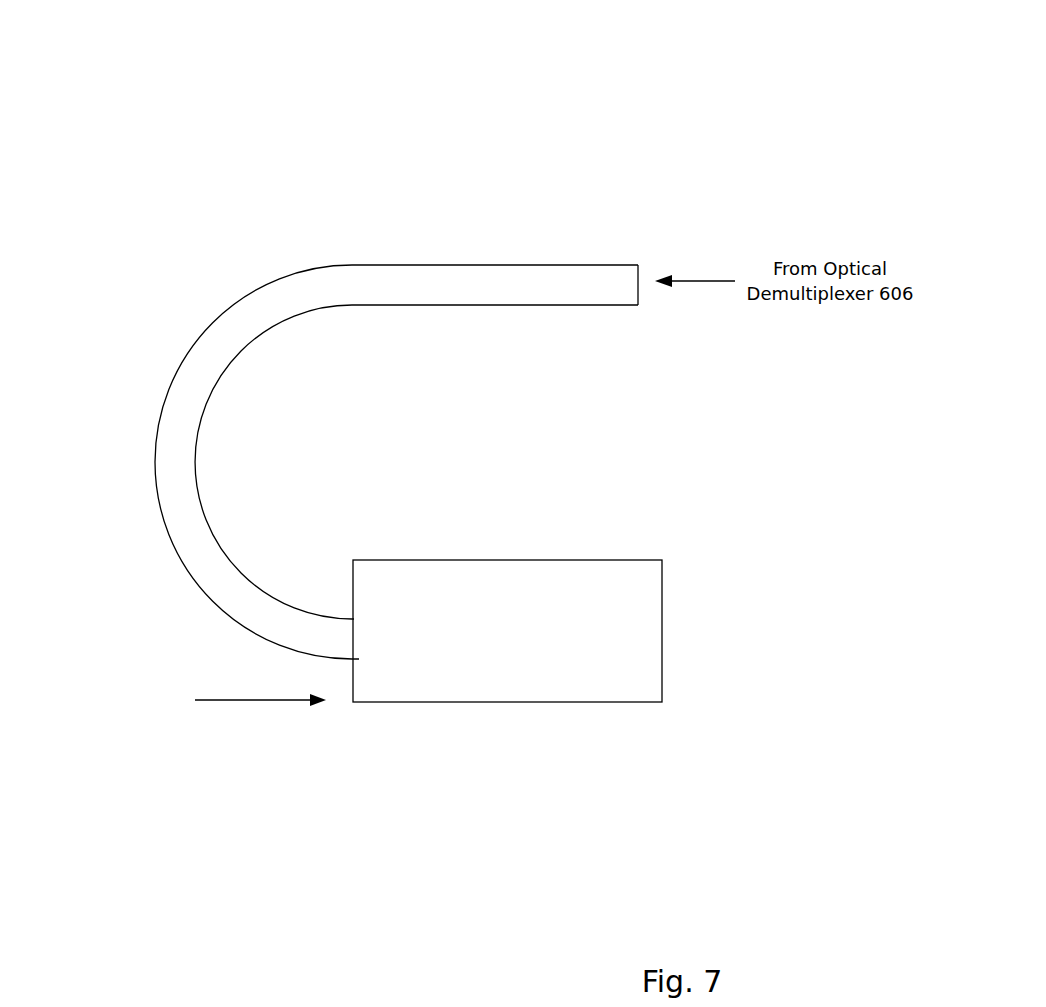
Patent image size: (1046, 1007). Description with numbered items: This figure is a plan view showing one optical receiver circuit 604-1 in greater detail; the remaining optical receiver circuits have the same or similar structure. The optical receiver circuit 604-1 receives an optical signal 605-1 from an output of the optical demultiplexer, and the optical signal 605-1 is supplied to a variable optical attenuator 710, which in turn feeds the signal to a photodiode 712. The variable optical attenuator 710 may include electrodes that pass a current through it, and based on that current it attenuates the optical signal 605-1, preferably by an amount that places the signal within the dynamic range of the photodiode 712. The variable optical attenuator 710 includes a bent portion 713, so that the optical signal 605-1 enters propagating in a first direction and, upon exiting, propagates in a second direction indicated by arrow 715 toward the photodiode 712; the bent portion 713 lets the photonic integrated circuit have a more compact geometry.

The optical receiver circuit 604-1 is at (378, 366).
The optical signal 605-1 is at (702, 280).
The bent portion 713 is at (167, 395).
The variable optical attenuator 710 is at (118, 589).
The arrow 715 is at (243, 700).
The photodiode 712 is at (573, 702).